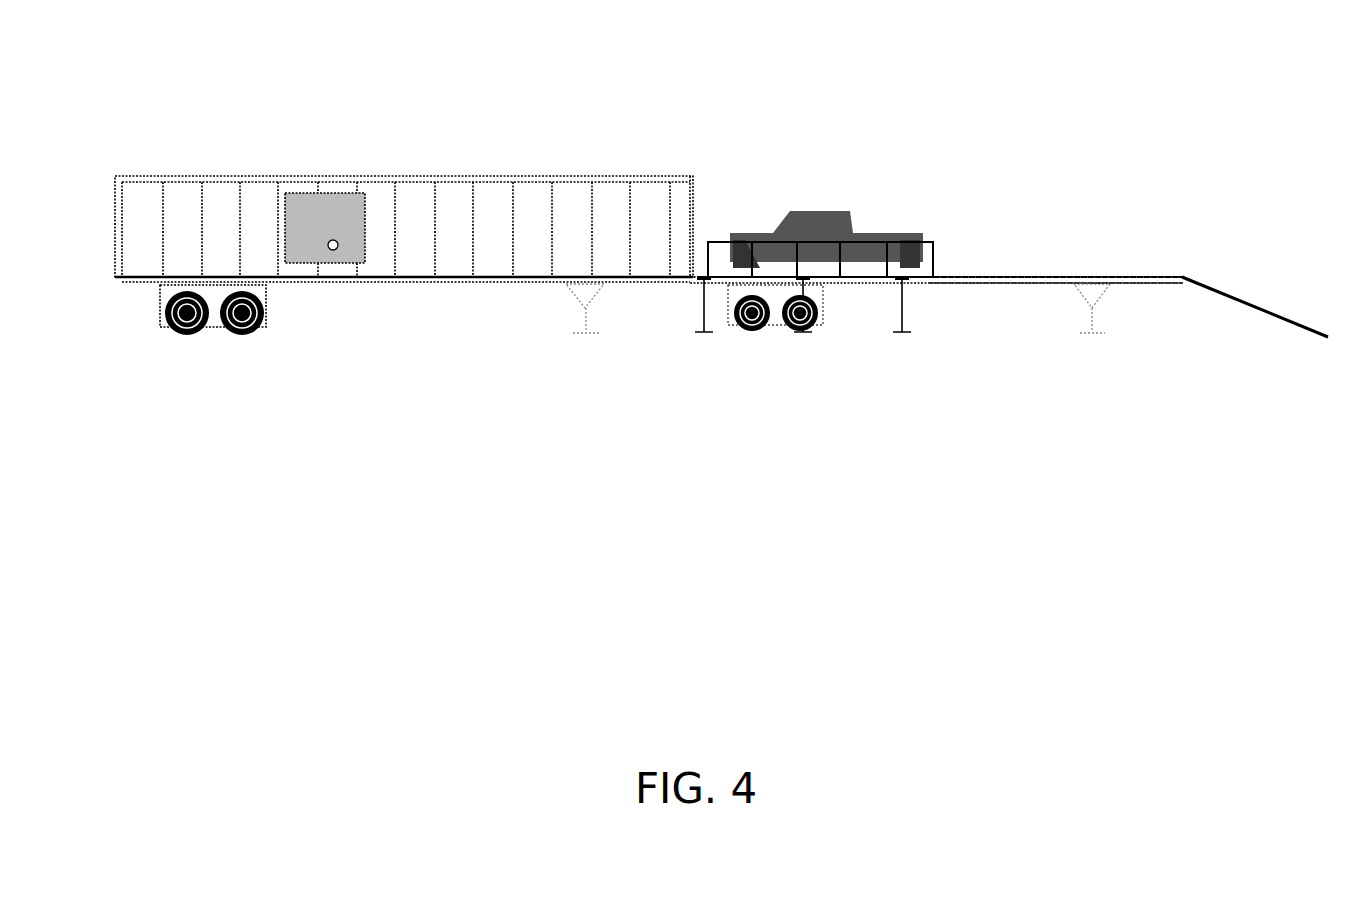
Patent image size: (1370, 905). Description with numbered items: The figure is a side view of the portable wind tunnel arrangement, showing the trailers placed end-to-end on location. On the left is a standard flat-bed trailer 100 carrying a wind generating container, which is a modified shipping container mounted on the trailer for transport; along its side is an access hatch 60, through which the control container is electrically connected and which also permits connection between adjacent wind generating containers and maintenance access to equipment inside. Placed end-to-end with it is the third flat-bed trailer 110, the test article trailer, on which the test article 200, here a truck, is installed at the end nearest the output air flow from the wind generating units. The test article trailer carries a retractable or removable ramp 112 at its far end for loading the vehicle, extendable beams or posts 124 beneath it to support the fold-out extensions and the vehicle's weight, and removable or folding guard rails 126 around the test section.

The access hatch 60 is at (337, 251).
The flat-bed trailer 100 is at (427, 280).
The third flat-bed trailer 110 is at (1025, 280).
The retractable or removable ramp 112 is at (1248, 305).
The extendable beam or post 124 is at (703, 300).
The removable or folding guard rail 126 is at (933, 243).
The test article 200 is at (853, 227).